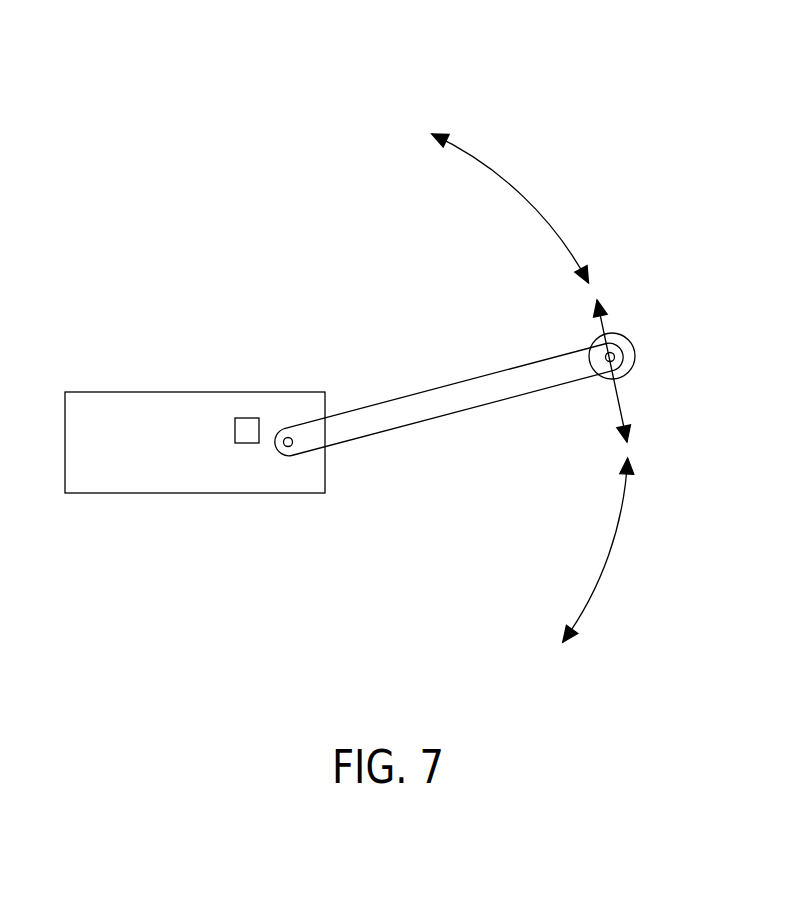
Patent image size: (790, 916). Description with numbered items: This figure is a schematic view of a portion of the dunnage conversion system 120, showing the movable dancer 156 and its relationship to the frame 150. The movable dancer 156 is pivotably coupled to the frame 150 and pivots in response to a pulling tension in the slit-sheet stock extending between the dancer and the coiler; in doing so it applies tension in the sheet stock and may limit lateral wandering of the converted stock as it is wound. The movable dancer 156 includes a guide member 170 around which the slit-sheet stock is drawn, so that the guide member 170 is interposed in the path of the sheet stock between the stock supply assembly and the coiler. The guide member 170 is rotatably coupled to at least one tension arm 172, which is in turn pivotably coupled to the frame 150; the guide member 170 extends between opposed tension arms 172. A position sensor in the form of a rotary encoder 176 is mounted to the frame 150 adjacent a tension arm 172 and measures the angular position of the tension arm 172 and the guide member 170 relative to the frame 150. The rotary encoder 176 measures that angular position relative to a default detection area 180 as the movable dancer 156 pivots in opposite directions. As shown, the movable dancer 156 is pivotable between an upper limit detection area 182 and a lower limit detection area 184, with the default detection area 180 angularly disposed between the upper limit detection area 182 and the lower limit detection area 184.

The movement direction of assembly 120 is at (393, 93).
The frame 150 is at (165, 493).
The movable dancer 156 is at (337, 500).
The guide member 170 is at (607, 382).
The tension arm 172 is at (445, 408).
The rotary encoder 176 is at (249, 430).
The default detection area 180 is at (618, 332).
The upper limit detection area 182 is at (530, 202).
The lower limit detection area 184 is at (598, 583).